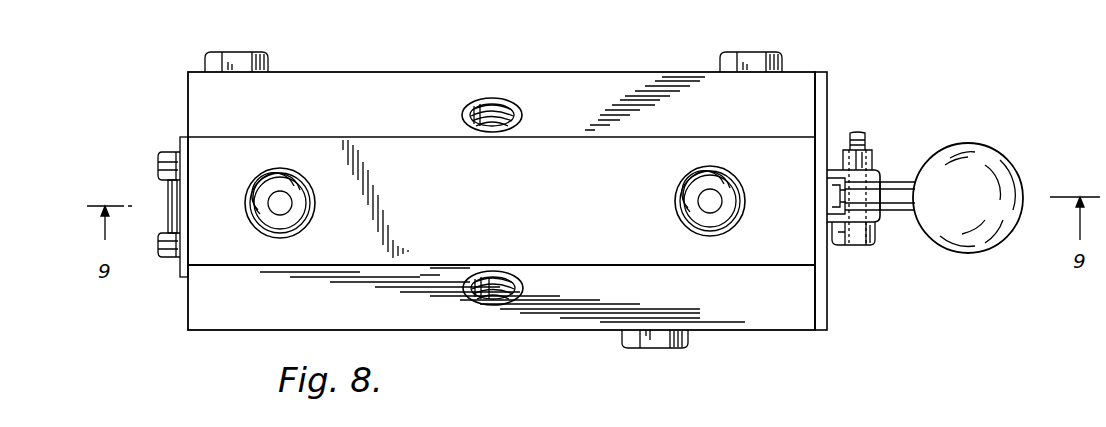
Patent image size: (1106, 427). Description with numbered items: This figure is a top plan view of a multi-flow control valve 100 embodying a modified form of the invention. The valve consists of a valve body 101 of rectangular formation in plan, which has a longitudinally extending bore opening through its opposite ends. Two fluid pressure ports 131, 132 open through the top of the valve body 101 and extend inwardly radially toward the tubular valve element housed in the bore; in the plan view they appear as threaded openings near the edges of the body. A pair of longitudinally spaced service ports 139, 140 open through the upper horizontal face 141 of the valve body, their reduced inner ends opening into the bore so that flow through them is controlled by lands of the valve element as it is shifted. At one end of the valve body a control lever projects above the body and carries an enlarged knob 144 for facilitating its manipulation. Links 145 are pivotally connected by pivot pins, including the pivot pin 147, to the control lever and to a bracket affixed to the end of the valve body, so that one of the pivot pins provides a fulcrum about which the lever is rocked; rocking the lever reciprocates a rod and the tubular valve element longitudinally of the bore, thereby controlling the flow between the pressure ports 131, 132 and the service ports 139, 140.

The multi-flow valve 100 is at (492, 200).
The valve body 101 is at (737, 330).
The pressure port 131 is at (493, 305).
The pressure port 132 is at (492, 115).
The service port 139 is at (282, 200).
The service port 140 is at (712, 198).
The upper horizontal face 141 is at (400, 162).
The knob 144 is at (980, 172).
The links 145 is at (890, 182).
The pivot pin 147 is at (868, 235).